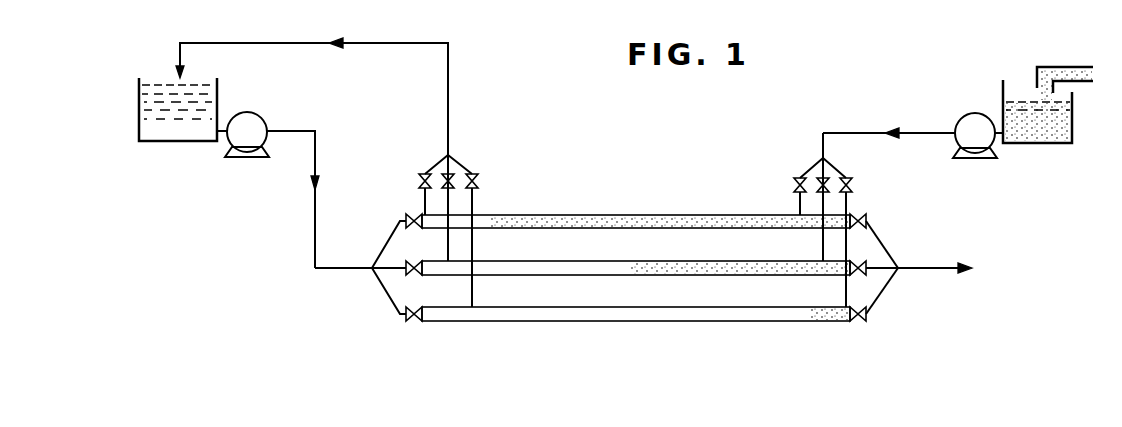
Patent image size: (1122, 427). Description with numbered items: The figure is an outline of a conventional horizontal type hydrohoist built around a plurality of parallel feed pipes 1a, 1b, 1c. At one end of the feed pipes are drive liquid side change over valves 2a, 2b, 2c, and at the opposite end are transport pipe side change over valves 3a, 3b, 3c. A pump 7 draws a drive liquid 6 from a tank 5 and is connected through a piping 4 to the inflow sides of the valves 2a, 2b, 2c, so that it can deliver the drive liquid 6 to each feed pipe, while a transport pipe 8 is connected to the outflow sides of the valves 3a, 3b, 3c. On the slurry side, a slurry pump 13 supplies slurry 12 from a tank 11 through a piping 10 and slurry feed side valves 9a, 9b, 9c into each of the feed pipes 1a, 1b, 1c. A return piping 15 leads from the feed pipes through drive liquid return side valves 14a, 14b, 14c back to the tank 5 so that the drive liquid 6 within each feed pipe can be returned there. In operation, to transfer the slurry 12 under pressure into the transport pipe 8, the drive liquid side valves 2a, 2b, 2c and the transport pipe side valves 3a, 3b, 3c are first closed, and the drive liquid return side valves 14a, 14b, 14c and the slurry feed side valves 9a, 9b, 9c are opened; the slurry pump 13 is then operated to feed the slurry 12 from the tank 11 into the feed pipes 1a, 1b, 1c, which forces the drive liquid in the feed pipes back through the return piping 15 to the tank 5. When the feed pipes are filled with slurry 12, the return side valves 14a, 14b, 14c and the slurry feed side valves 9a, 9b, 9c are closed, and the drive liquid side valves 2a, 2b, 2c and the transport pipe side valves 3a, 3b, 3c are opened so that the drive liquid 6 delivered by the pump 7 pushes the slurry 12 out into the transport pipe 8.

The feed pipe 1a is at (614, 196).
The feed pipe 1b is at (609, 242).
The feed pipe 1c is at (615, 321).
The drive liquid side change over valve 2a is at (405, 216).
The drive liquid side change over valve 2b is at (404, 264).
The drive liquid side change over valve 2c is at (412, 321).
The transport pipe side change over valve 3a is at (868, 221).
The transport pipe side change over valve 3b is at (876, 268).
The transport pipe side change over valve 3c is at (862, 322).
The piping 4 is at (314, 212).
The tank 5 is at (218, 98).
The drive liquid 6 is at (164, 96).
The pump 7 is at (254, 123).
The transport pipe 8 is at (924, 269).
The slurry feed side valve 9a is at (794, 185).
The slurry feed side valve 9b is at (819, 175).
The slurry feed side valve 9c is at (852, 181).
The piping 10 is at (863, 133).
The tank 11 is at (1003, 100).
The slurry 12 is at (1030, 108).
The slurry pump 13 is at (982, 158).
The drive liquid return side valve 14a is at (424, 174).
The drive liquid return side valve 14b is at (450, 174).
The drive liquid return side valve 14c is at (479, 181).
The return piping 15 is at (397, 43).